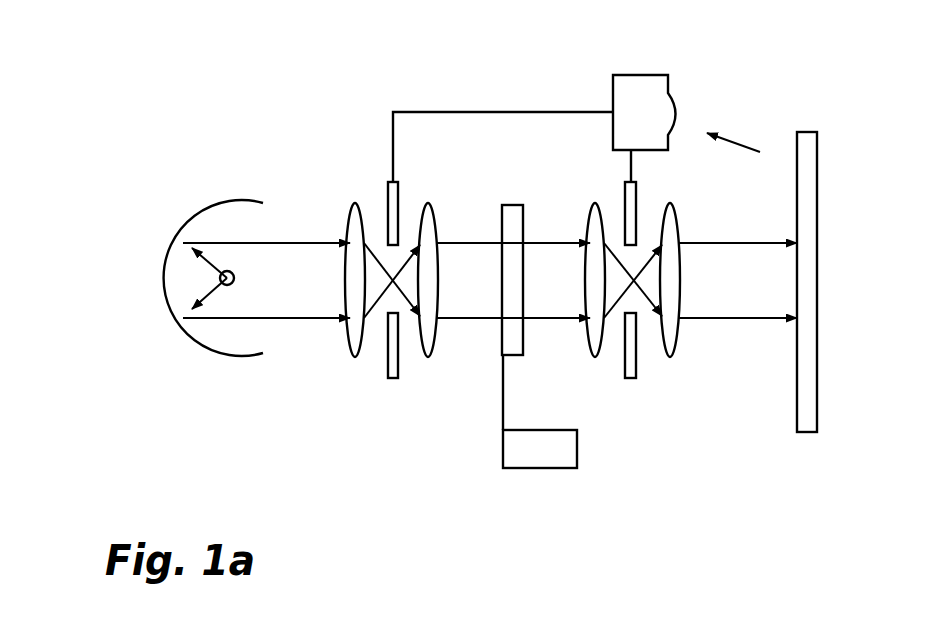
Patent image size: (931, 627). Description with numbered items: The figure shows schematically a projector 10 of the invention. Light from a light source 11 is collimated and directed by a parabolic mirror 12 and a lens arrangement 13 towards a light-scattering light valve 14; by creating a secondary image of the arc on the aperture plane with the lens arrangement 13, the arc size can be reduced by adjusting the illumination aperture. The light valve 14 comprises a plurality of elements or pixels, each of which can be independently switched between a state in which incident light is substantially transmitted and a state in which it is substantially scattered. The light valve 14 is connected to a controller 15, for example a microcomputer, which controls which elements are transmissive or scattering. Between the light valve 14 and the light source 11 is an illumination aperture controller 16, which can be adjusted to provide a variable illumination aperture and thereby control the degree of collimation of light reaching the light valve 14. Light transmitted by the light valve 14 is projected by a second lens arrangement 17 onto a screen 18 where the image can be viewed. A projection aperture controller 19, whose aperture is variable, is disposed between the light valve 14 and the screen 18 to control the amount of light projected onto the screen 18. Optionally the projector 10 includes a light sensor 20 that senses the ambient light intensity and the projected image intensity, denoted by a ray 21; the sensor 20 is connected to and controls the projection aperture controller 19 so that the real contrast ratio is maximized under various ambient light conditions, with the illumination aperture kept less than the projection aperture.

The projector 10 is at (173, 150).
The light source 11 is at (232, 285).
The parabolic mirror 12 is at (209, 341).
The lens arrangement 13 is at (428, 357).
The light-scattering light valve 14 is at (522, 205).
The controller 15 is at (540, 468).
The illumination aperture controller 16 is at (387, 182).
The lens arrangement 17 is at (652, 432).
The screen 18 is at (797, 432).
The projection aperture controller 19 is at (628, 182).
The light sensor 20 is at (633, 75).
The ray 21 is at (742, 142).